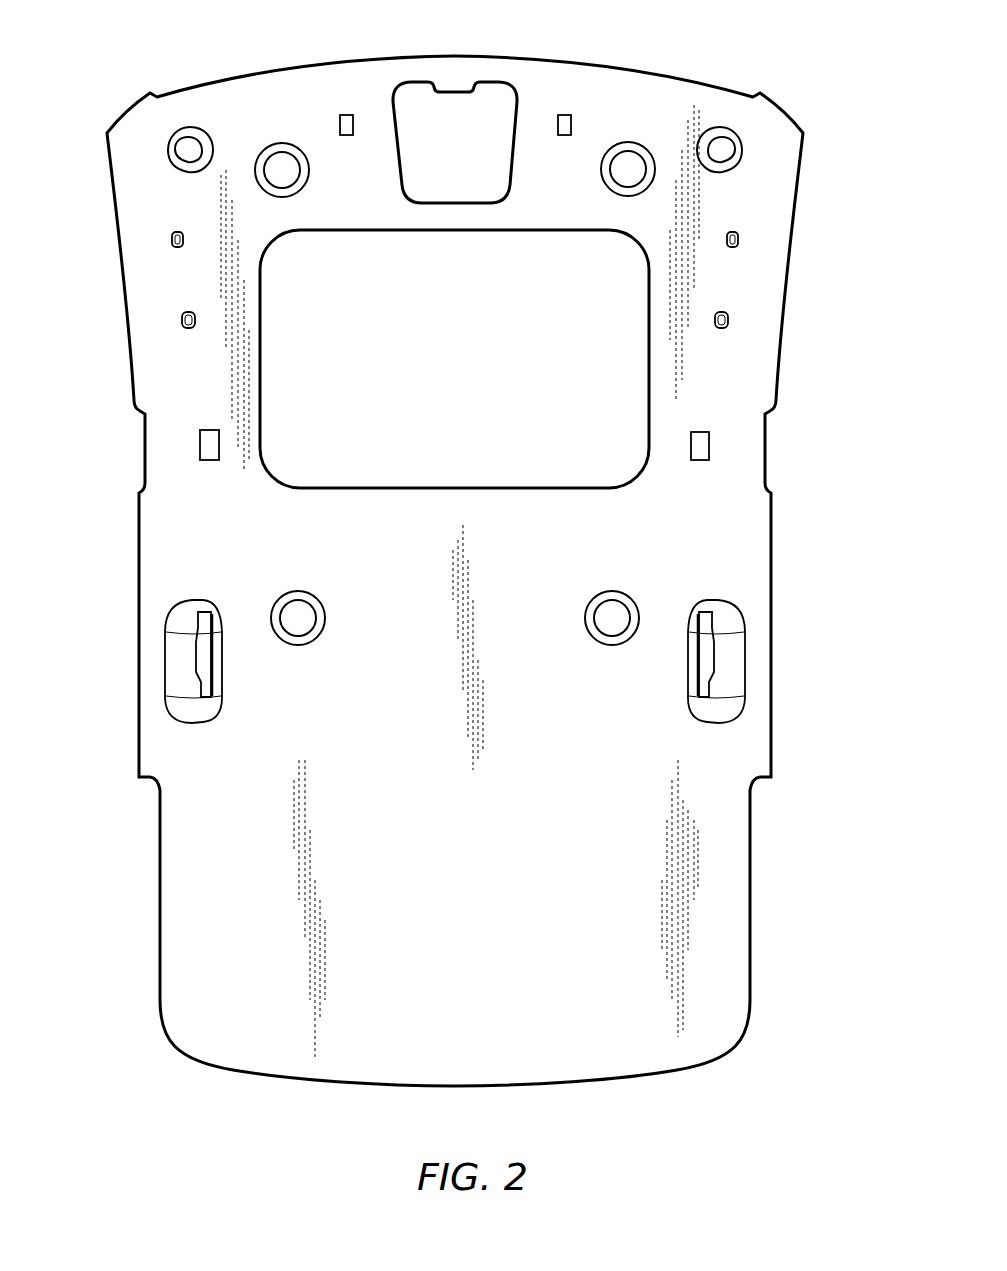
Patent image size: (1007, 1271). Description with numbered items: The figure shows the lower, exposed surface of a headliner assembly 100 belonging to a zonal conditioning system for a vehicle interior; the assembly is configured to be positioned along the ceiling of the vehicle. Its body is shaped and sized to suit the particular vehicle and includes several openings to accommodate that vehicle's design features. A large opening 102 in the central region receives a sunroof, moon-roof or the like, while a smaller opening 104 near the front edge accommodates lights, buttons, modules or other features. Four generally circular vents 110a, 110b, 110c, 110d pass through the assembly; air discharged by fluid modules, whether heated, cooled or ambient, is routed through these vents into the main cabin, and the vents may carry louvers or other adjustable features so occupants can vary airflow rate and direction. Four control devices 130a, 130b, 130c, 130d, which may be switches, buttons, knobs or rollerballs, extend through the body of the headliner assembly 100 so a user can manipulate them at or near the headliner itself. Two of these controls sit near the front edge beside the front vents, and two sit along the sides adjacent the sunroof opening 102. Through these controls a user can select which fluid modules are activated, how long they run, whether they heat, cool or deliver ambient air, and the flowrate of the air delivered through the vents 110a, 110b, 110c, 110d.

The headliner assembly 100 is at (757, 57).
The opening 102 is at (482, 375).
The other opening 104 is at (470, 162).
The vent 110a is at (282, 143).
The vent 110b is at (628, 142).
The vent 110c is at (271, 617).
The vent 110d is at (639, 615).
The control device 130a is at (345, 114).
The control device 130b is at (564, 114).
The control device 130c is at (199, 447).
The control device 130d is at (710, 447).